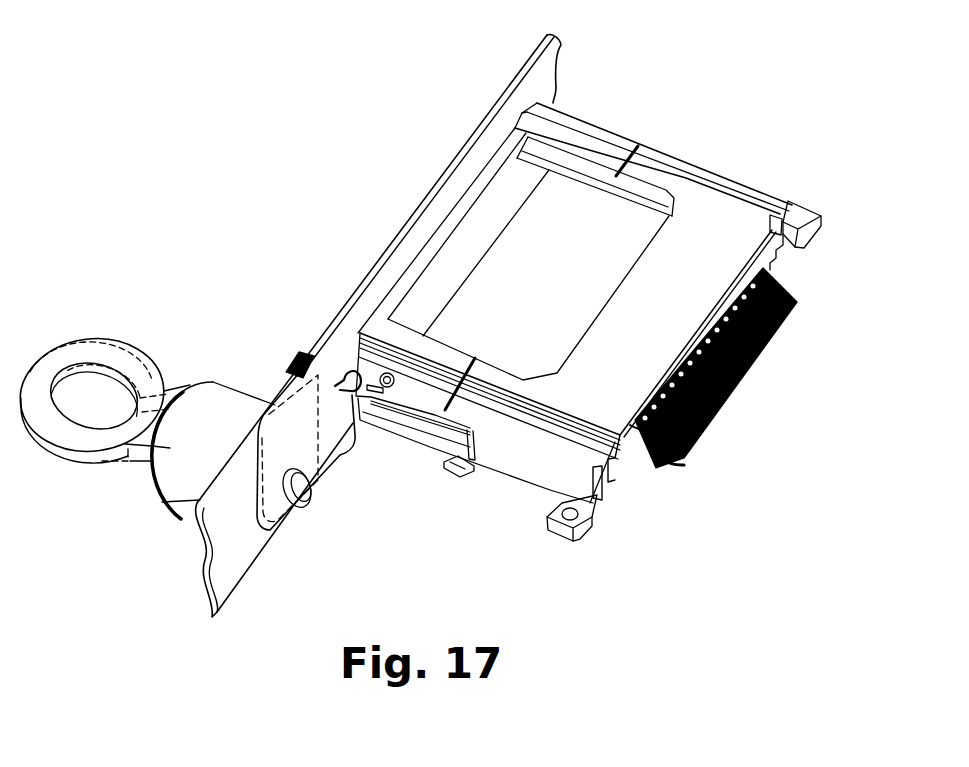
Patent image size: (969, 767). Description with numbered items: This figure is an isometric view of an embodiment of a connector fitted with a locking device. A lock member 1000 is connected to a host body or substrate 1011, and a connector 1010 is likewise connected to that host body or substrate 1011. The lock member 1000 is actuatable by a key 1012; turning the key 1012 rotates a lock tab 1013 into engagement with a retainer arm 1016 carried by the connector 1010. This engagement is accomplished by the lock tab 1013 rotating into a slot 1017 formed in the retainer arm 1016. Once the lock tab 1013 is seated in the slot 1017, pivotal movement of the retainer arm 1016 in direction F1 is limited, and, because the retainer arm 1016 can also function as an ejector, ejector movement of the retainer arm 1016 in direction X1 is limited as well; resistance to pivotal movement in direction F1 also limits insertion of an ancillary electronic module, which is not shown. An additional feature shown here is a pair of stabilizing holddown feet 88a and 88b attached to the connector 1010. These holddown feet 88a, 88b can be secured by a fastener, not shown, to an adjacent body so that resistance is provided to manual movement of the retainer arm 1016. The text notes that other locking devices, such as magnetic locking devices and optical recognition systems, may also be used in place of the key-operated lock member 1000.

The host body or substrate 1011 is at (481, 127).
The connector 1010 is at (606, 350).
The stabilizing holddown foot 88b is at (796, 210).
The stabilizing holddown foot 88a is at (561, 528).
The retainer arm 1016 is at (513, 460).
The slot 1017 is at (340, 383).
The lock tab 1013 is at (340, 456).
The lock member 1000 is at (175, 498).
The key 1012 is at (121, 343).
The direction of pivotal movement F1 is at (215, 356).
The direction of ejector movement X1 is at (625, 508).